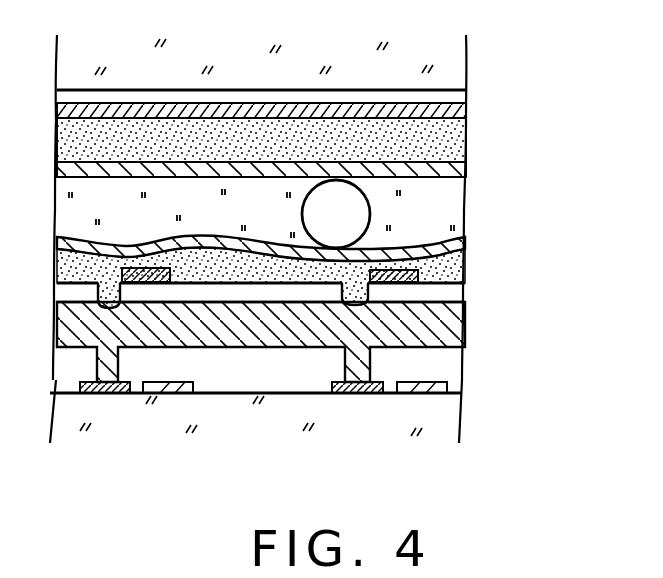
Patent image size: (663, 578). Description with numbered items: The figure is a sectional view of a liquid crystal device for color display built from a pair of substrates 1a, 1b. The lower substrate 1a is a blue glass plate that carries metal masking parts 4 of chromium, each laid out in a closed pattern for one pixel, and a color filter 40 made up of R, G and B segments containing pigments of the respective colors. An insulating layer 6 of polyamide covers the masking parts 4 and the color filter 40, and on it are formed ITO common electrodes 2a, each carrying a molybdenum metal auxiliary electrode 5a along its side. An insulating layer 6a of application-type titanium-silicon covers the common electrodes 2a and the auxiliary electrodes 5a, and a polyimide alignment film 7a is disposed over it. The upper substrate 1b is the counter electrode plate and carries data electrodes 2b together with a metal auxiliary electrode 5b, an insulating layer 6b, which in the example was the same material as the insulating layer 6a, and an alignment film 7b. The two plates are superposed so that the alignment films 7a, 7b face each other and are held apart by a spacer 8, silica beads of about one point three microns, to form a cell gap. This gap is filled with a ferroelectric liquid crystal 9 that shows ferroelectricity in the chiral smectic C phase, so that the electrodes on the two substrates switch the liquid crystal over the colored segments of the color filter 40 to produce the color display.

The substrate 1b is at (466, 60).
The data electrodes 2b is at (466, 95).
The metal auxiliary electrode 5b is at (466, 110).
The insulating layer 6b is at (466, 137).
The alignment film 7b is at (466, 172).
The spacer 8 is at (360, 207).
The ferroelectric liquid crystal 9 is at (455, 214).
The alignment film 7a is at (462, 252).
The insulating layer 6a is at (466, 270).
The metal auxiliary electrode 5a is at (466, 281).
The common electrodes 2a is at (466, 295).
The insulating layer 6 is at (466, 324).
The color filter 40 is at (450, 368).
The metal masking parts 4 is at (370, 394).
The substrate 1a is at (221, 425).